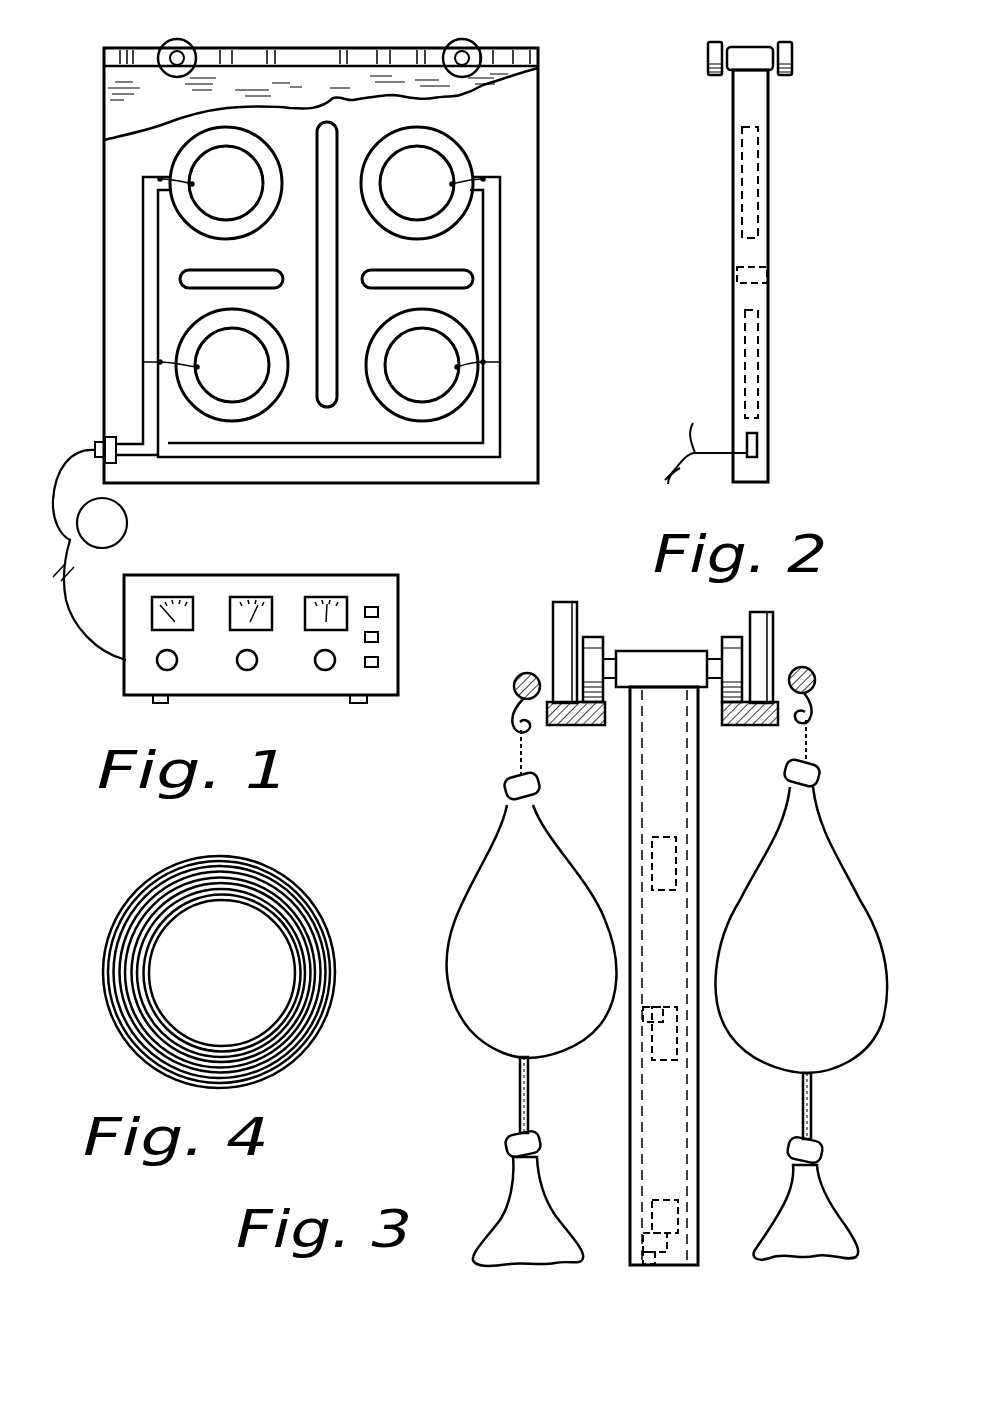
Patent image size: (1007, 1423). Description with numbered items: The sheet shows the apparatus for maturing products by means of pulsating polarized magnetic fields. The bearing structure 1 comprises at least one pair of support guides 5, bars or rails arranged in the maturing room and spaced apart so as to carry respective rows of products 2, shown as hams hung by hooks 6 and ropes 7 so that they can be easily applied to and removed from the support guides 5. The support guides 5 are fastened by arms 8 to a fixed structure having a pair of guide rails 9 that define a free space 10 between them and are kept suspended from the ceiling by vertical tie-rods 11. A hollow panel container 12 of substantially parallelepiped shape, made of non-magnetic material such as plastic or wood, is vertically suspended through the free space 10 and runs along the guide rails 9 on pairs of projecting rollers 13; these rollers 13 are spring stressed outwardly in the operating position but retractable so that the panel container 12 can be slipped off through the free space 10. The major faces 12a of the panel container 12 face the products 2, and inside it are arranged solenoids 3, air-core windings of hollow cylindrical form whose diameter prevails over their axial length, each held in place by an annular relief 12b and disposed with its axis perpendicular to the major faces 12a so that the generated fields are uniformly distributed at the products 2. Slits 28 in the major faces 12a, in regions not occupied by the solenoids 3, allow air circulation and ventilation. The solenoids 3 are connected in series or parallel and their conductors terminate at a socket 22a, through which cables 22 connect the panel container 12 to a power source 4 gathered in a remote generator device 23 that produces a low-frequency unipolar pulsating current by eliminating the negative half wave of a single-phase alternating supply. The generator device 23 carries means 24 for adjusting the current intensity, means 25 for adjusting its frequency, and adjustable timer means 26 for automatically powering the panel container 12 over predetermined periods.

In FIG. 3, the bearing structure 1 is at (808, 632).
In FIG. 3, the products 2 is at (480, 902).
In FIG. 1, the solenoid 3 is at (262, 162).
In FIG. 2, the solenoid 3 is at (760, 136).
In FIG. 4, the solenoid 3 is at (292, 878).
In FIG. 1, the power source 4 is at (256, 638).
In FIG. 3, the support guides 5 is at (515, 676).
In FIG. 3, the hooks 6 is at (514, 735).
In FIG. 3, the ropes 7 is at (532, 765).
In FIG. 3, the arms 8 is at (545, 685).
In FIG. 3, the guide rails 9 is at (586, 726).
In FIG. 3, the free space 10 is at (618, 735).
In FIG. 3, the vertical tie-rods 11 is at (553, 606).
In FIG. 1, the panel container 12 is at (548, 190).
In FIG. 2, the panel container 12 is at (776, 187).
In FIG. 3, the panel container 12 is at (631, 1112).
In FIG. 1, the major faces 12a is at (122, 106).
In FIG. 2, the major faces 12a is at (737, 245).
In FIG. 3, the major faces 12a is at (630, 1033).
In FIG. 3, the annular relief 12b is at (689, 874).
In FIG. 1, the projecting rollers 13 is at (183, 45).
In FIG. 2, the projecting rollers 13 is at (707, 50).
In FIG. 3, the projecting rollers 13 is at (592, 642).
In FIG. 1, the cables 22 is at (125, 543).
In FIG. 2, the cables 22 is at (708, 432).
In FIG. 1, the socket 22a is at (113, 463).
In FIG. 1, the generator device 23 is at (286, 590).
In FIG. 1, the means for adjusting the pulsating current intensity 24 is at (157, 663).
In FIG. 1, the means for adjusting the pulsating current frequency 25 is at (255, 668).
In FIG. 1, the adjustable timer means 26 is at (333, 665).
In FIG. 1, the slits 28 is at (338, 130).
In FIG. 2, the slits 28 is at (770, 276).